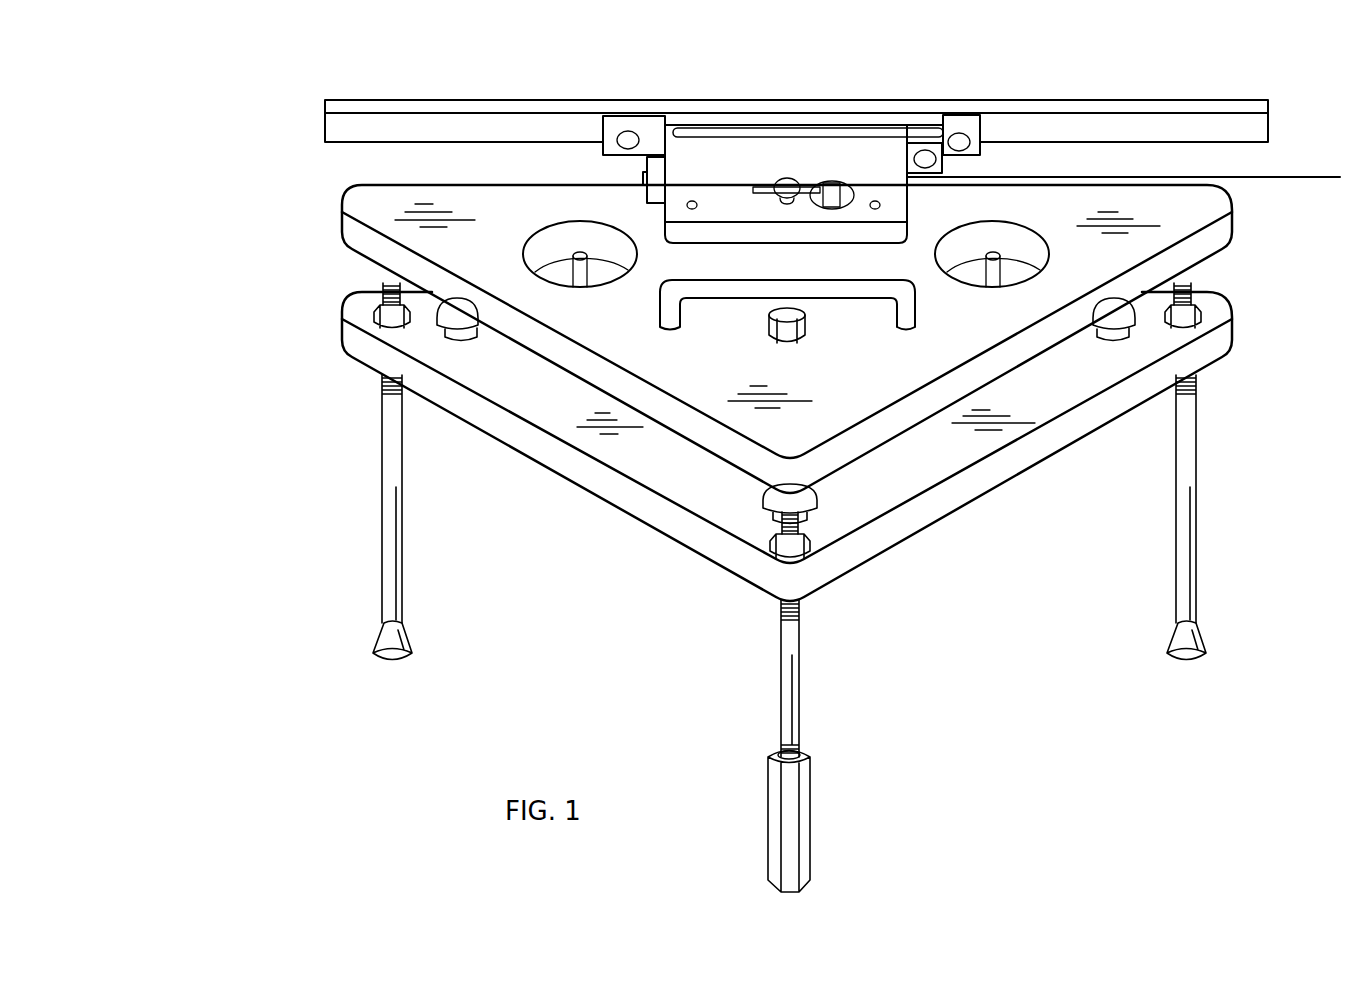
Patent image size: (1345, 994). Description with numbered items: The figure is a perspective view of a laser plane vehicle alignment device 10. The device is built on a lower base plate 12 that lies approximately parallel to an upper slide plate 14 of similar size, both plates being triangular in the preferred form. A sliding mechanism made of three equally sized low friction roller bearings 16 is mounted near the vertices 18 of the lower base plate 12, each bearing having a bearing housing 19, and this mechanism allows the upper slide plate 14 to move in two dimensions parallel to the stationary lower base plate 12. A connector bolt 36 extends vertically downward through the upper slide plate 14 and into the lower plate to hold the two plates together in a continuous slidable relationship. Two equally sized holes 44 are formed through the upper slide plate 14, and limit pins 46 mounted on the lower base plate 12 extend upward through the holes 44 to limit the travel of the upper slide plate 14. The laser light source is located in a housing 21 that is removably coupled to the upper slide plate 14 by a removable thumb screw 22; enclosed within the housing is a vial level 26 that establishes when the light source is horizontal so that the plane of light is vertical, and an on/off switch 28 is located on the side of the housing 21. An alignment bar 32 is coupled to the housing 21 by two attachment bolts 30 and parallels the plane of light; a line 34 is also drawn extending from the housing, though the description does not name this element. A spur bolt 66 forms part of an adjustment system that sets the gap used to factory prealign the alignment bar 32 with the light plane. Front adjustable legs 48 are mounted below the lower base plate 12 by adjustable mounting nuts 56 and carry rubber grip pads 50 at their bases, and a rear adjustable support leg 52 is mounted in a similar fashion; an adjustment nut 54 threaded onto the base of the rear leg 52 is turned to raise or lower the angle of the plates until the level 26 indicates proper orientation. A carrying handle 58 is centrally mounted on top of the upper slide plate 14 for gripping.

The laser plane vehicle alignment device 10 is at (790, 98).
The lower base plate 12 is at (1236, 328).
The upper slide plate 14 is at (1235, 218).
The roller bearings 16 is at (480, 333).
The vertices 18 is at (745, 535).
The bearing housing 19 is at (444, 318).
The housing 21 is at (786, 165).
The removable thumb screw 22 is at (776, 186).
The vial level 26 is at (848, 186).
The on/off switch 28 is at (646, 168).
The attachment bolts 30 is at (617, 137).
The alignment bar 32 is at (1212, 103).
The reference line 34 is at (1270, 177).
The connector bolt 36 is at (805, 330).
The holes 44 is at (547, 240).
The limit pins 46 is at (590, 280).
The front adjustable legs 48 is at (382, 516).
The rubber grip pads 50 is at (378, 630).
The rear adjustable support leg 52 is at (801, 665).
The adjustment nut 54 is at (811, 812).
The adjustable mounting nuts 56 is at (372, 308).
The carrying handle 58 is at (706, 290).
The spur bolt 66 is at (936, 158).